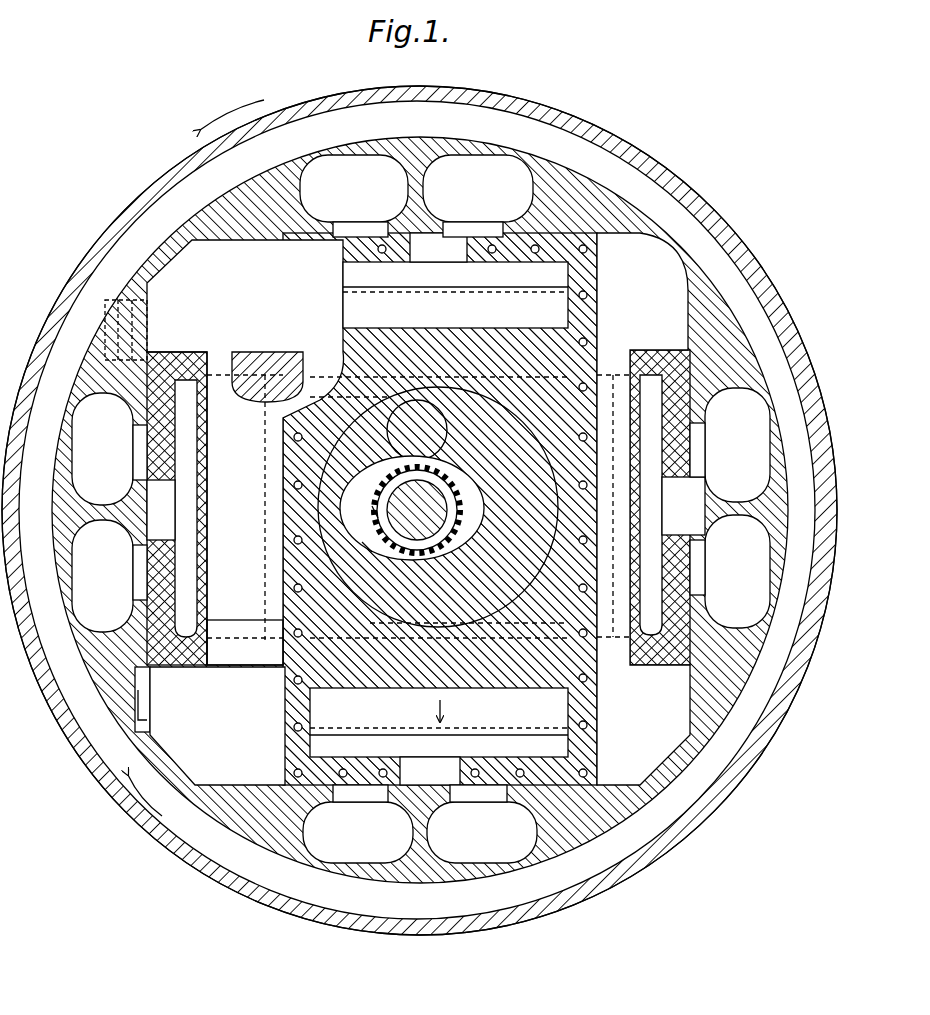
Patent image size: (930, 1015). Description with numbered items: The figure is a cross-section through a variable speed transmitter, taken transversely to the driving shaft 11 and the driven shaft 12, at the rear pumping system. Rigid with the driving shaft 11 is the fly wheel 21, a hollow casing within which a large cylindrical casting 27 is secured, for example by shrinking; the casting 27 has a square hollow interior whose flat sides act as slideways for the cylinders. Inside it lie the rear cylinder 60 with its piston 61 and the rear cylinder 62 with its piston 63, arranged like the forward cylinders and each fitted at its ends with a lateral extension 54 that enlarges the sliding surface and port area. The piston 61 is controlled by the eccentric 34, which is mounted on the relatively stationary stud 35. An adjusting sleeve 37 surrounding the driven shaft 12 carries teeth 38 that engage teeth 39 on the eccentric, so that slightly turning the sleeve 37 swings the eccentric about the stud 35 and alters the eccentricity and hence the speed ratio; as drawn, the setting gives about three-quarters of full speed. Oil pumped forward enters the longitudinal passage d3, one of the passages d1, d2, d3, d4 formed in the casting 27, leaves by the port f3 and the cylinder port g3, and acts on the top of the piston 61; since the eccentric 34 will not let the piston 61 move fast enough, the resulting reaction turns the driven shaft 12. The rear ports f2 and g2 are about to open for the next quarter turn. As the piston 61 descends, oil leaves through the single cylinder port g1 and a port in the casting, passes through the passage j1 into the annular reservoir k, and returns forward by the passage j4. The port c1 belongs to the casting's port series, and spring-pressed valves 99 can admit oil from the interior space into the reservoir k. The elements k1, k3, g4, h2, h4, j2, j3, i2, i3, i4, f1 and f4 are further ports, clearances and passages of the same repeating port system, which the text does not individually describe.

The fly wheel 21 is at (690, 186).
The large cylindrical casting 27 is at (578, 192).
The extension 54 is at (186, 352).
The spring-pressed valve 99 is at (148, 302).
The piston 63 is at (276, 396).
The stationary stud 35 is at (424, 418).
The eccentric 34 is at (496, 426).
The driven shaft 12 is at (384, 506).
The driving shaft 11 is at (404, 500).
The adjusting sleeve 37 is at (390, 522).
The teeth 38 is at (372, 512).
The teeth 39 is at (366, 548).
The cylinder 60 is at (282, 716).
The piston 61 is at (392, 680).
The cylinder 62 is at (250, 652).
The annular passage or reservoir k is at (432, 906).
The lower passage k1 is at (510, 742).
The upper passage k3 is at (455, 292).
The cylinder port g1 is at (392, 770).
The port g2 is at (686, 506).
The cylinder port g3 is at (426, 244).
The left port g4 is at (160, 506).
The right valve chamber h2 is at (652, 426).
The left valve chamber h4 is at (180, 426).
The passage j1 is at (460, 896).
The right upper cylinder j2 is at (748, 410).
The upper left cylinder j3 is at (354, 188).
The passage j4 is at (42, 590).
The right cylinder port i2 is at (698, 458).
The upper cylinder port i3 is at (361, 230).
The left cylinder port i4 is at (144, 575).
The passage d1 is at (358, 832).
The passage d2 is at (716, 567).
The passage d3 is at (478, 188).
The passage d4 is at (102, 449).
The lower cylinder port f1 is at (352, 798).
The port f2 is at (700, 567).
The port f3 is at (476, 160).
The left cylinder port f4 is at (144, 453).
The port c1 is at (462, 798).